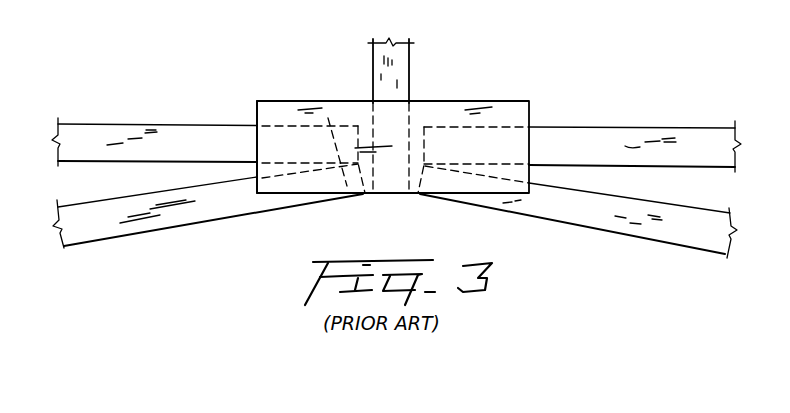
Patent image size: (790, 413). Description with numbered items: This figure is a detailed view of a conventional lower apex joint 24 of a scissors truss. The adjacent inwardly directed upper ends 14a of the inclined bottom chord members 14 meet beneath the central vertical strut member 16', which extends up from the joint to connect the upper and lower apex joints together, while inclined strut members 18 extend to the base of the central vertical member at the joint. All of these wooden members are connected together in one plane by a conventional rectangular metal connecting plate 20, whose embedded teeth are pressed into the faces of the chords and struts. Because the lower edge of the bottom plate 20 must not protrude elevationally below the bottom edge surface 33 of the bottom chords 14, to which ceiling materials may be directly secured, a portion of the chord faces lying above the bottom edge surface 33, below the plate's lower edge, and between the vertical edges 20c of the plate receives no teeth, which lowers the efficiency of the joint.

The bottom chord member 14 is at (209, 202).
The upper end of bottom chord 14a is at (328, 112).
The central vertical strut member 16' is at (410, 114).
The inclined strut member 18 is at (583, 137).
The rectangular metal connecting plate 20 is at (492, 108).
The vertical edge of bottom plate 20c is at (257, 131).
The lower apex joint 24 is at (364, 217).
The bottom edge surface of bottom chord 33 is at (182, 227).